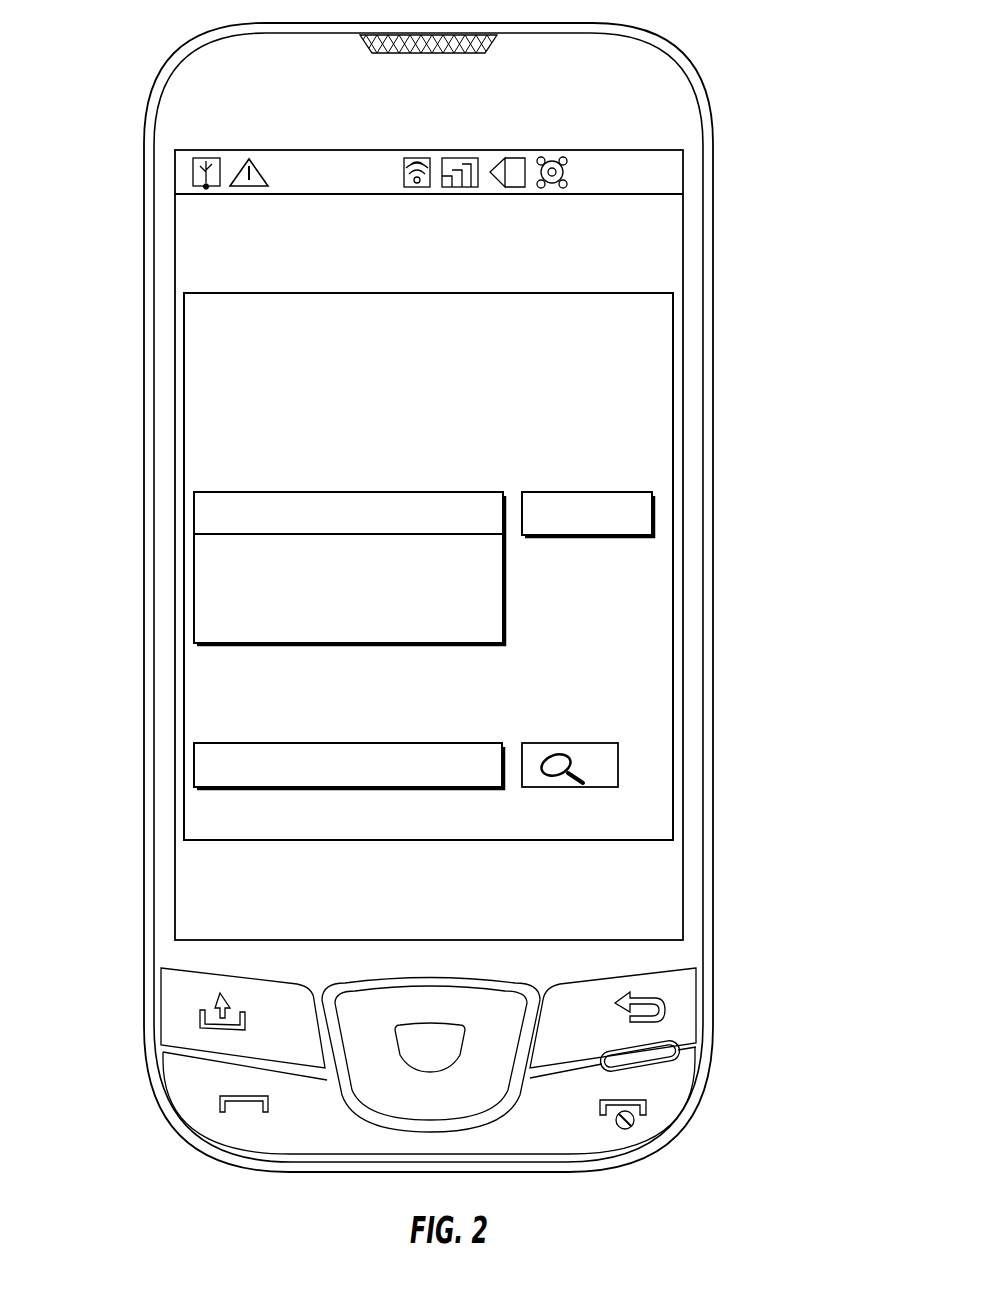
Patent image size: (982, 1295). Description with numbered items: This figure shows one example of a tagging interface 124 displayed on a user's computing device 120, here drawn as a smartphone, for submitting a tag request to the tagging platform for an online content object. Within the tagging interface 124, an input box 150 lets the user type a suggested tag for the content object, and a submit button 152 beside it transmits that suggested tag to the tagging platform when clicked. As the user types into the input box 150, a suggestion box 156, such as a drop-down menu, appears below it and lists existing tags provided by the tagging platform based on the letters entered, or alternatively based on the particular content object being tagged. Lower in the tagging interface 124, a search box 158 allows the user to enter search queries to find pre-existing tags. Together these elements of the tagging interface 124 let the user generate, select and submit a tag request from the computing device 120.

The computing device 120 is at (713, 104).
The tagging interface 124 is at (648, 292).
The input box 150 is at (207, 490).
The submit button 152 is at (653, 518).
The suggestion box 156 is at (503, 615).
The search box 158 is at (207, 743).